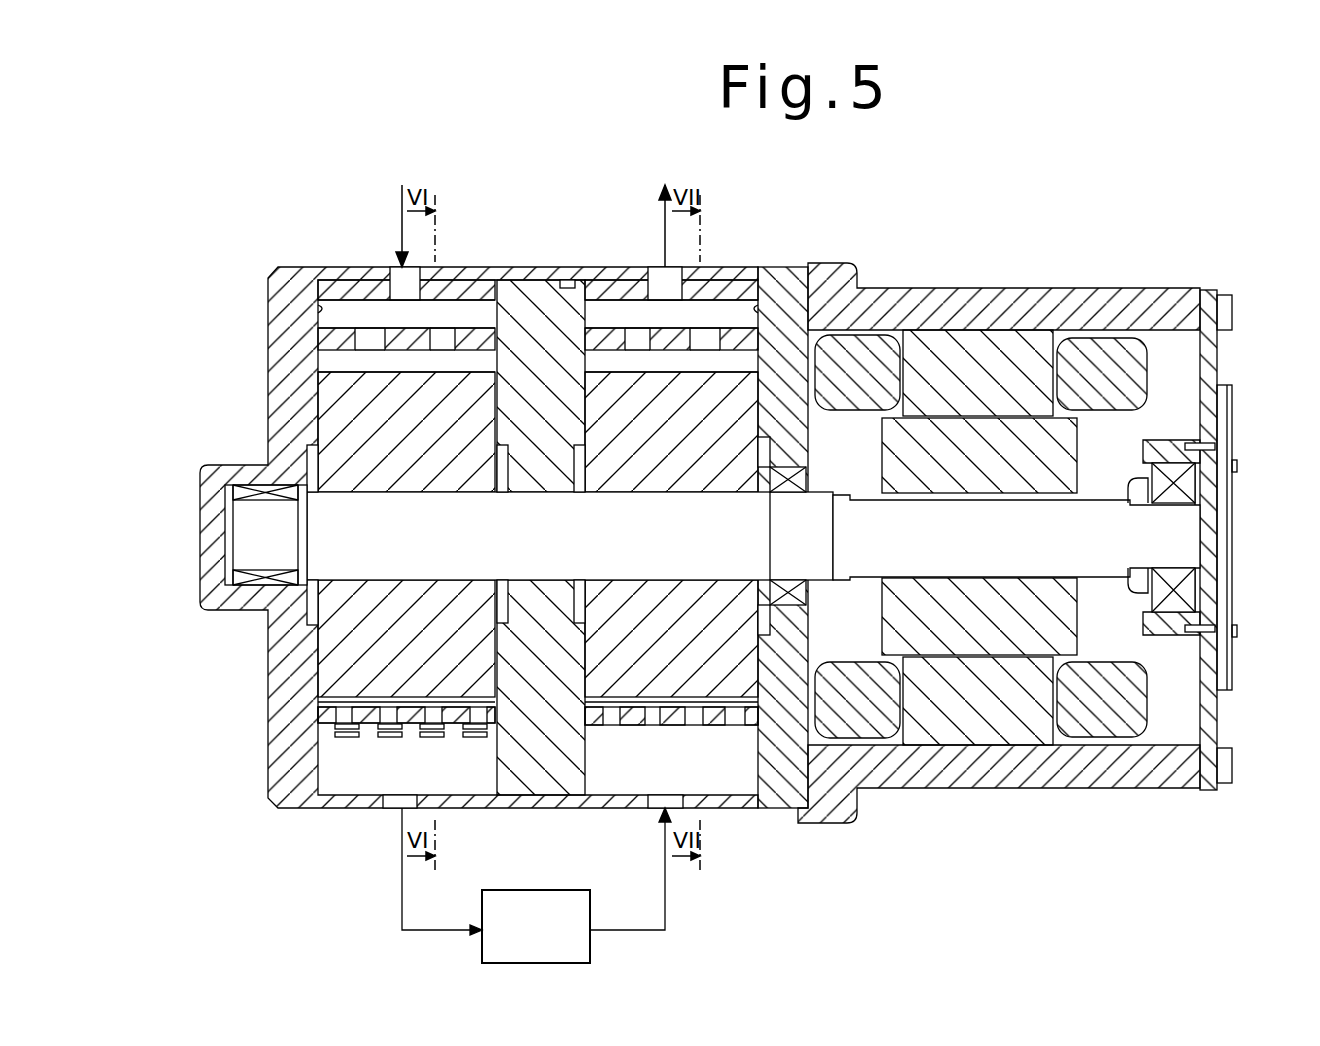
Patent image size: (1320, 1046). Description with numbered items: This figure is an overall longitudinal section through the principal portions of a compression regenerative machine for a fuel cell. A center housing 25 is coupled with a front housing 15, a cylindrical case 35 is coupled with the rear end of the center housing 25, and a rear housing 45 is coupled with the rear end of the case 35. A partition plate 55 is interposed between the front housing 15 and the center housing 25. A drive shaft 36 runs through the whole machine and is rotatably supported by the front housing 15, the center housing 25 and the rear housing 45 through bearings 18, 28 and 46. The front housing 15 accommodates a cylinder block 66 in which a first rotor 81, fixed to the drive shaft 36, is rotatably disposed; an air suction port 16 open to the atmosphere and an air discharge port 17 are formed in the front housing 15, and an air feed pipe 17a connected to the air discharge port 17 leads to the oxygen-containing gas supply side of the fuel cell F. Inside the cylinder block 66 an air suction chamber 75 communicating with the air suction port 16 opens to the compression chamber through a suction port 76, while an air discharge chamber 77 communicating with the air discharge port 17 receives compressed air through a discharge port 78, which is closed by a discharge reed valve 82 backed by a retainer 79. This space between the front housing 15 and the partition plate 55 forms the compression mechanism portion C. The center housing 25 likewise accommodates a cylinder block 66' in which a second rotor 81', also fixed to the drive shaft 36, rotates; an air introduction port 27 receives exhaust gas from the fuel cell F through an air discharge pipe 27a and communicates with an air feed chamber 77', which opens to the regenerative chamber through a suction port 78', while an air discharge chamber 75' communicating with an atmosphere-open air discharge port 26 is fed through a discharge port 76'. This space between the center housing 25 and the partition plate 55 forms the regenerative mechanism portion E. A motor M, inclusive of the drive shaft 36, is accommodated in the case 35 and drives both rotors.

The front housing 15 is at (278, 267).
The air suction port 16 is at (420, 270).
The air discharge port 17 is at (393, 808).
The air feed pipe 17a is at (402, 908).
The bearing 18 is at (262, 598).
The center housing 25 is at (785, 300).
The air discharge port 26 is at (662, 298).
The air introduction port 27 is at (650, 808).
The air discharge pipe 27a is at (665, 918).
The bearing 28 is at (787, 495).
The case 35 is at (950, 300).
The drive shaft 36 is at (657, 543).
The rear housing 45 is at (1205, 385).
The bearing 46 is at (1180, 492).
The partition plate 55 is at (525, 285).
The cylinder block 66 is at (406, 246).
The cylinder block 66' is at (671, 246).
The air suction chamber 75 is at (347, 298).
The air discharge chamber 75' is at (726, 260).
The suction port 76 is at (347, 346).
The discharge port 76' is at (754, 305).
The air discharge chamber 77 is at (388, 802).
The air feed chamber 77' is at (690, 796).
The discharge port 78 is at (406, 743).
The suction port 78' is at (671, 743).
The retainer 79 is at (428, 732).
The first rotor 81 is at (347, 534).
The second rotor 81' is at (729, 534).
The discharge reed valve 82 is at (395, 730).
The compression mechanism portion C is at (452, 192).
The regenerative mechanism portion E is at (705, 192).
The fuel cell F is at (536, 926).
The motor M is at (1022, 800).